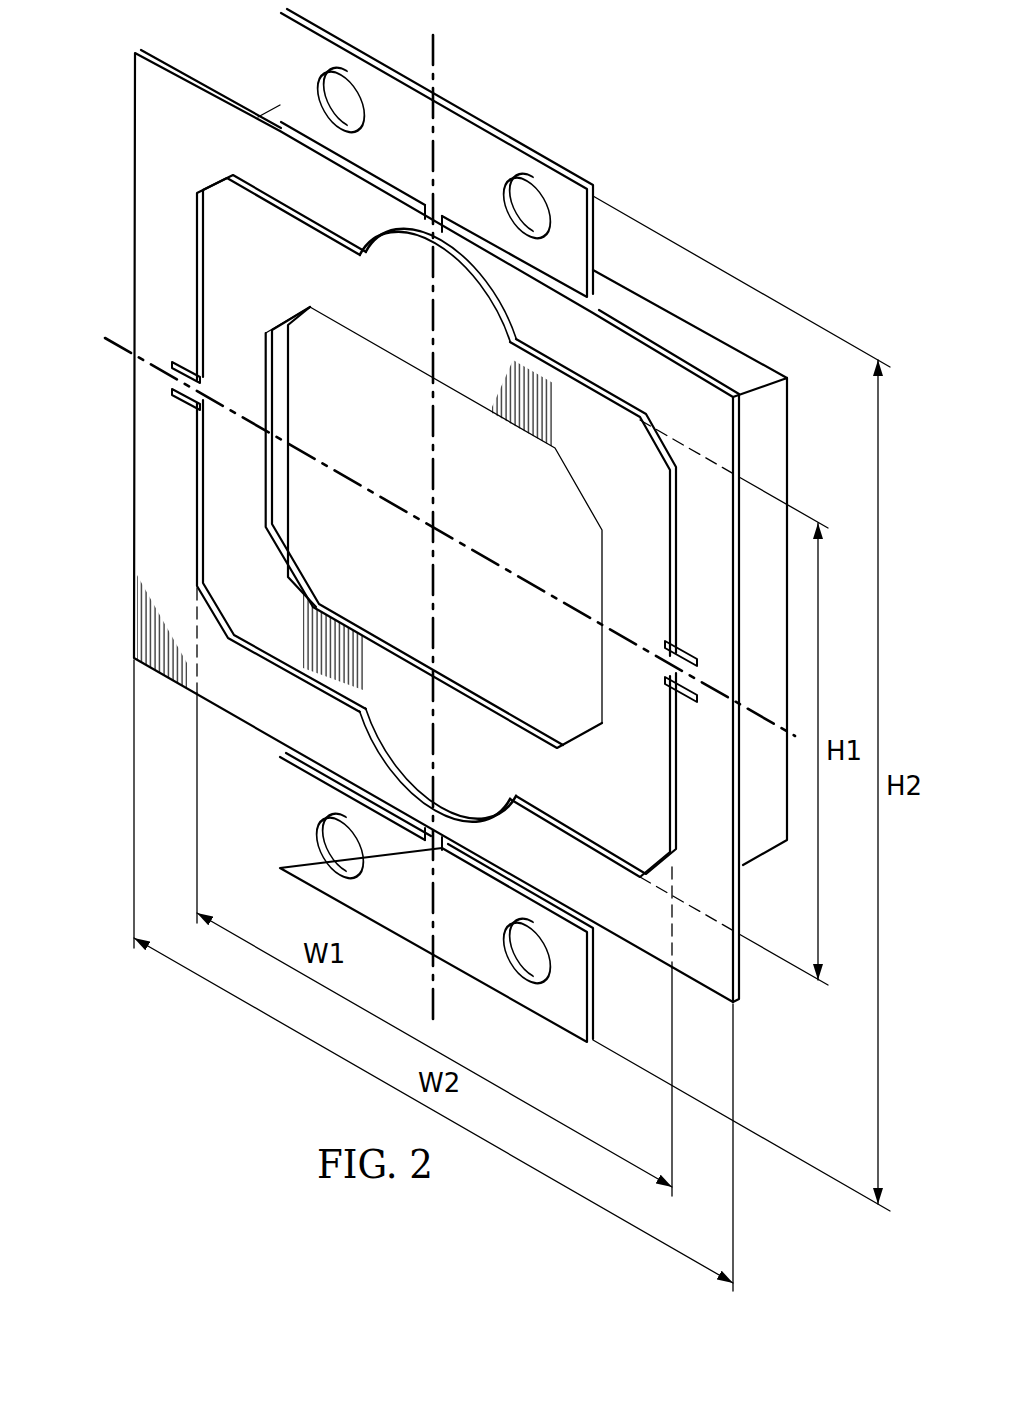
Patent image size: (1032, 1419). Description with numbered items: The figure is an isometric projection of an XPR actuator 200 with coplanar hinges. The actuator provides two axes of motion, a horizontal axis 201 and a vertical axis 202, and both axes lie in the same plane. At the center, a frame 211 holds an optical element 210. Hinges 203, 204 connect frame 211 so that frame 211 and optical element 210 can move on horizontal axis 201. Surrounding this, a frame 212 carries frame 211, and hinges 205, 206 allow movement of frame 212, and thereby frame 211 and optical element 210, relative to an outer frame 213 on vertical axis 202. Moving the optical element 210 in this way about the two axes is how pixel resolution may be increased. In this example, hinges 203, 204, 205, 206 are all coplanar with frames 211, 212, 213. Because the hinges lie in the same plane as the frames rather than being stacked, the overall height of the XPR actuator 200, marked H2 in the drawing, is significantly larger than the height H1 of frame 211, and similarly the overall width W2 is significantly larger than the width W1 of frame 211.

The XPR actuator 200 is at (416, 525).
The horizontal axis 201 is at (103, 339).
The vertical axis 202 is at (436, 50).
The hinge 203 is at (187, 403).
The hinge 204 is at (690, 652).
The hinge 205 is at (416, 838).
The hinge 206 is at (418, 216).
The optical element 210 is at (490, 677).
The frame 211 is at (212, 252).
The frame 212 is at (143, 508).
The frame 213 is at (288, 65).